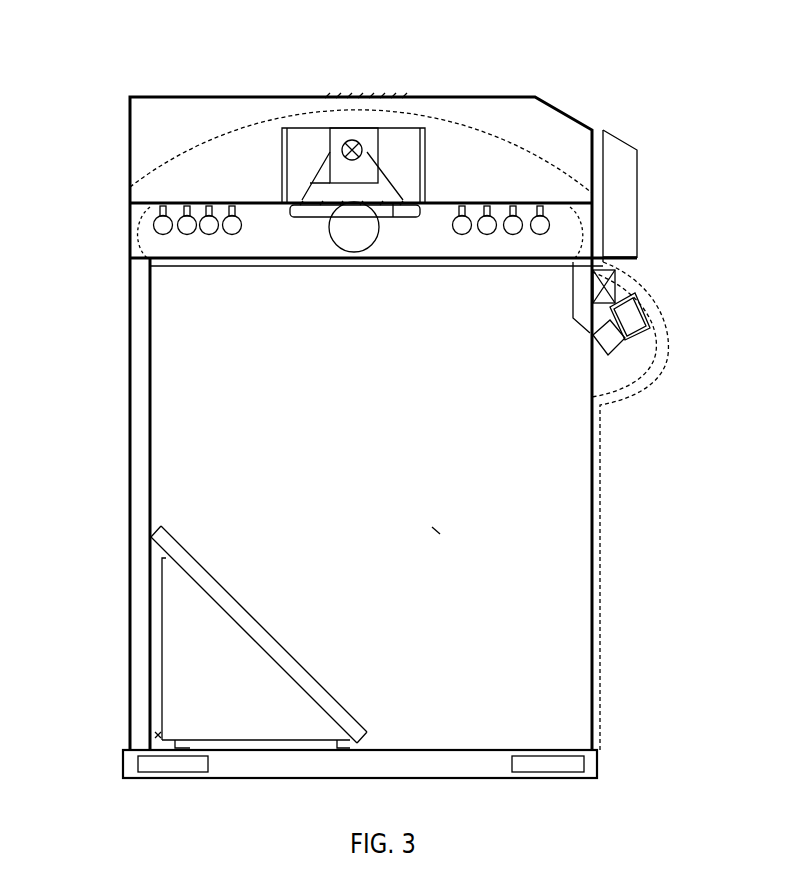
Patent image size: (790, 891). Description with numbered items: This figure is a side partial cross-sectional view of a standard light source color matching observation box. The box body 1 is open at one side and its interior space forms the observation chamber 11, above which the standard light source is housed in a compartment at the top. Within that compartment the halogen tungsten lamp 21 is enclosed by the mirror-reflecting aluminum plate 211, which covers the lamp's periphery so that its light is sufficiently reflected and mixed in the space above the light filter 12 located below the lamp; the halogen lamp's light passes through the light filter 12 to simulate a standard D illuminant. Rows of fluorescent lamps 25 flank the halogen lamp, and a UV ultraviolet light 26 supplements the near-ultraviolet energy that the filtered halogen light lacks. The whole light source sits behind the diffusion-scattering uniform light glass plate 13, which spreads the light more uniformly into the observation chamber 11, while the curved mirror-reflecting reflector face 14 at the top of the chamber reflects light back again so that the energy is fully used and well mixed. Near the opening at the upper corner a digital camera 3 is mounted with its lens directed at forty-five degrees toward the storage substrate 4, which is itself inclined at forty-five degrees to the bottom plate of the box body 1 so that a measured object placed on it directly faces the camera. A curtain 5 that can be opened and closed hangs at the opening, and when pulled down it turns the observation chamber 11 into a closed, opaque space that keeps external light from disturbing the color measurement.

The box body 1 is at (140, 440).
The digital camera 3 is at (610, 340).
The storage substrate 4 is at (225, 588).
The curtain 5 is at (604, 505).
The observation chamber 11 is at (393, 203).
The light filter 12 is at (313, 212).
The diffusion-scattering uniform light glass plate 13 is at (573, 253).
The mirror-reflecting reflector face 14 is at (272, 203).
The halogen tungsten lamp 21 is at (347, 140).
The mirror-reflecting aluminum plate 211 is at (326, 178).
The fluorescent lamp 25 is at (146, 201).
The UV ultraviolet light 26 is at (300, 203).